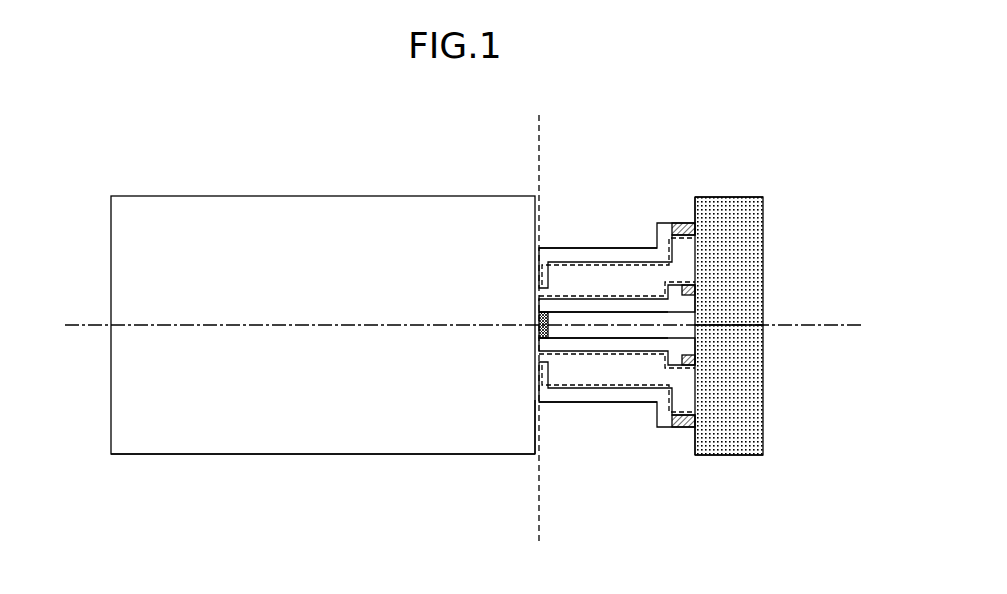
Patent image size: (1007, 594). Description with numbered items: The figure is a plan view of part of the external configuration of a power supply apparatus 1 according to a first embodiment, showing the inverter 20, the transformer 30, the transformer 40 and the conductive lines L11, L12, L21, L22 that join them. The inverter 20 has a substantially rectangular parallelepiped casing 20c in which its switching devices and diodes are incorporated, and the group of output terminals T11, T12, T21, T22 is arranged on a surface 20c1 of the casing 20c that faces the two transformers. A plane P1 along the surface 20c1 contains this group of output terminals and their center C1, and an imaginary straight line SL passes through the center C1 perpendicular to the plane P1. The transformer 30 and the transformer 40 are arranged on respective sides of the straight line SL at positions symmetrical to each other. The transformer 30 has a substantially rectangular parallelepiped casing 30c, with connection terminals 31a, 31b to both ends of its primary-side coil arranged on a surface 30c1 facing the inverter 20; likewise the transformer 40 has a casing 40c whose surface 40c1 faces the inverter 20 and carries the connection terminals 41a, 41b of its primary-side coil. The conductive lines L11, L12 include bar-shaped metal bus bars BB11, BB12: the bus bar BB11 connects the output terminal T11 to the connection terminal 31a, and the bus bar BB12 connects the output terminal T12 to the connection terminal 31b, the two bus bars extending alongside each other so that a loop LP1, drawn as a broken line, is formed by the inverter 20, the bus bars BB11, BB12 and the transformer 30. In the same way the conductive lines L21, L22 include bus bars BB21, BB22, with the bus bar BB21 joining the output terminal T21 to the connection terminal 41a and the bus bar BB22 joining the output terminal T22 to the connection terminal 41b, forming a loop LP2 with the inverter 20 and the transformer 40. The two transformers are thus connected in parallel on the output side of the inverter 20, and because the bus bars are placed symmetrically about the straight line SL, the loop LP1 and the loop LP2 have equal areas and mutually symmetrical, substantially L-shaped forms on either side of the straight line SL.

The power supply apparatus 1 is at (138, 126).
The inverter 20 is at (270, 527).
The casing 20c is at (268, 456).
The surface 20c1 is at (540, 434).
The transformer 30 is at (735, 130).
The casing 30c is at (725, 197).
The surface 30c1 is at (690, 199).
The connection terminal 31a is at (681, 221).
The connection terminal 31b is at (691, 302).
The transformer 40 is at (735, 522).
The casing 40c is at (727, 456).
The surface 40c1 is at (689, 452).
The connection terminal 41a is at (691, 347).
The connection terminal 41b is at (677, 430).
The bus bar BB11 is at (592, 247).
The bus bar BB12 is at (691, 308).
The bus bar BB21 is at (691, 342).
The bus bar BB22 is at (593, 403).
The output terminal T11 is at (545, 244).
The output terminal T12 is at (556, 319).
The output terminal T21 is at (556, 331).
The output terminal T22 is at (546, 409).
The conductive line L11 is at (599, 161).
The conductive line L12 is at (818, 285).
The conductive line L21 is at (818, 367).
The conductive line L22 is at (612, 480).
The loop LP1 is at (637, 262).
The loop LP2 is at (637, 388).
The center C1 is at (533, 333).
The plane P1 is at (541, 527).
The straight line SL is at (849, 328).